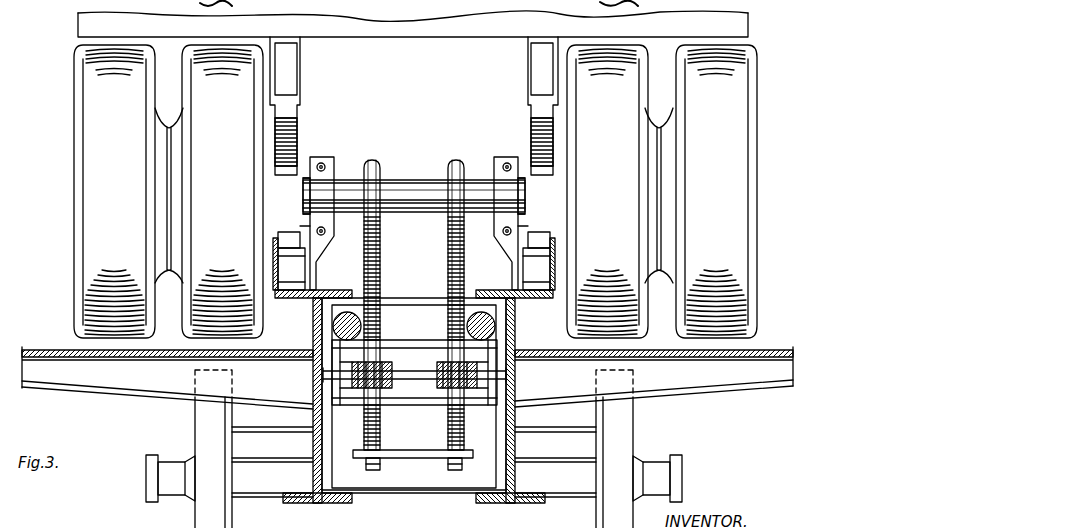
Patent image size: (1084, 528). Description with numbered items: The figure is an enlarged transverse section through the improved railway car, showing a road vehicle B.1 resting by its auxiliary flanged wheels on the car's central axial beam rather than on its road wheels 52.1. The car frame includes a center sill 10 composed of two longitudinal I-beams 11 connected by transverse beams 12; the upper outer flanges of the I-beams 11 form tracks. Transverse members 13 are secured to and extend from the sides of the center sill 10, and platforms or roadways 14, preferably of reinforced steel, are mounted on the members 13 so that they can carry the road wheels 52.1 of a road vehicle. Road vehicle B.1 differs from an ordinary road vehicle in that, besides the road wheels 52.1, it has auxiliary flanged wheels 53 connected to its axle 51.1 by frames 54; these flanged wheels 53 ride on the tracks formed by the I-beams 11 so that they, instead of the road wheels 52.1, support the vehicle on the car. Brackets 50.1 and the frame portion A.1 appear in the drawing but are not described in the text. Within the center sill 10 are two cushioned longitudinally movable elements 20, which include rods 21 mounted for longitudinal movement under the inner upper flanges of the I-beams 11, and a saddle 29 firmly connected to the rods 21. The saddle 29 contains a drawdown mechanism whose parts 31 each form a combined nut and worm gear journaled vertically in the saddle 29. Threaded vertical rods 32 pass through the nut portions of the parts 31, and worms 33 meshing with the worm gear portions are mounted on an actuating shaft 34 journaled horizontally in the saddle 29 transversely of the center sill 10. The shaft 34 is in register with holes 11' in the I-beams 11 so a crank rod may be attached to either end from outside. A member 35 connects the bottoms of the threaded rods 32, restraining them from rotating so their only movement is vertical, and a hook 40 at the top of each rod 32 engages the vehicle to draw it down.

The road vehicle B.1 is at (78, 15).
The road wheels 52.1 is at (95, 190).
The suspension brackets 50.1 is at (300, 70).
The hook 40 is at (447, 164).
The axle 51.1 is at (413, 200).
The auxiliary flanged wheels 53 is at (290, 272).
The frames 54 is at (312, 236).
The longitudinal I-beams 11 is at (411, 396).
The saddle 29 is at (428, 340).
The cushioned longitudinally movable elements 20 is at (455, 308).
The rods 21 is at (365, 310).
The threaded vertical rods 32 is at (448, 270).
The actuating shaft 34 is at (414, 372).
The worms 33 is at (414, 381).
The combined nut and worm gear parts 31 is at (452, 392).
The member 35 is at (432, 462).
The platforms or roadways 14 is at (44, 348).
The transverse members 13 is at (170, 382).
The frame A.1 is at (760, 380).
The center sill 10 is at (305, 478).
The holes 11' is at (409, 375).
The transverse beams 12 is at (452, 494).